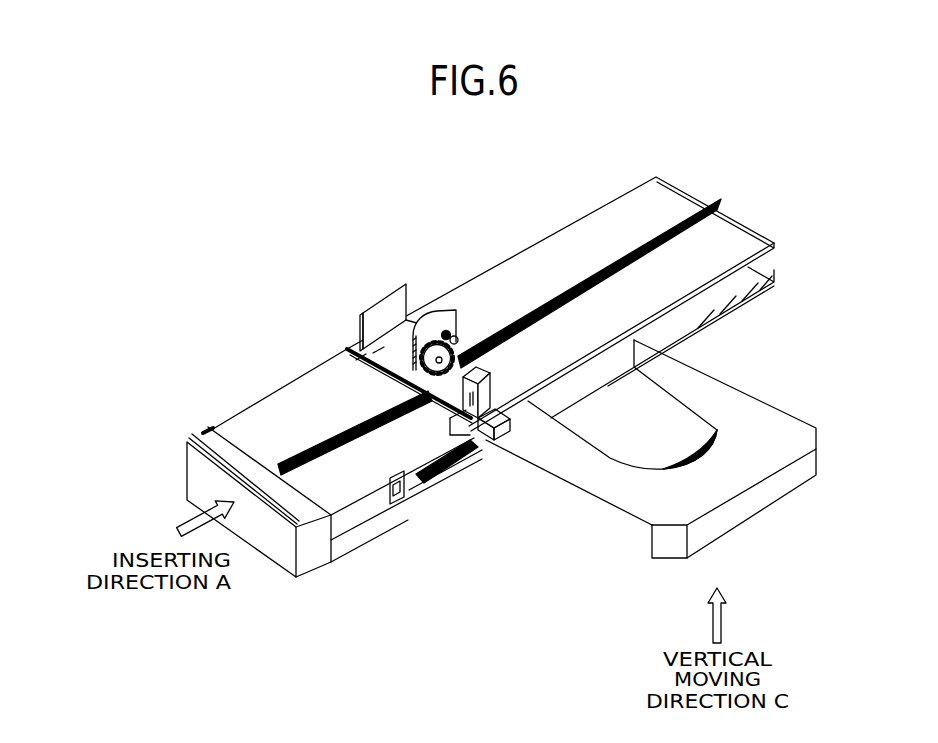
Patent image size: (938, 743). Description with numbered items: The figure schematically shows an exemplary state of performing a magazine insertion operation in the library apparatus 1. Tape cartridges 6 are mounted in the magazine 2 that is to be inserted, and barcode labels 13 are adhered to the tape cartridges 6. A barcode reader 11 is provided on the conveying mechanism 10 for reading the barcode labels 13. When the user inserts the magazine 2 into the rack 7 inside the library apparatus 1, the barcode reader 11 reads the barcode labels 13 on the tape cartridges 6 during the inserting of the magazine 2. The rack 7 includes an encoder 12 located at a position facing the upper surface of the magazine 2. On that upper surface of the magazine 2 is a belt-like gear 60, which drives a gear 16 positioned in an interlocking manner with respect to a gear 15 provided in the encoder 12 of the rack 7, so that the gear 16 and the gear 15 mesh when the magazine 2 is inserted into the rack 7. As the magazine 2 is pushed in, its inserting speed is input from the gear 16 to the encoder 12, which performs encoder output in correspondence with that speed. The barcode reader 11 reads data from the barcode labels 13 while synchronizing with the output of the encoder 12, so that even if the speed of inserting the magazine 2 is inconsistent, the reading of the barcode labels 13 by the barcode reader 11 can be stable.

The library apparatus 1 is at (320, 182).
The magazine 2 is at (276, 404).
The tape cartridges 6 is at (379, 497).
The rack 7 is at (348, 352).
The conveying mechanism 10 is at (731, 468).
The barcode reader 11 is at (489, 454).
The encoder 12 is at (424, 305).
The barcode labels 13 is at (433, 458).
The gear 15 is at (446, 325).
The gear 16 is at (406, 340).
The belt-like gear 60 is at (686, 200).